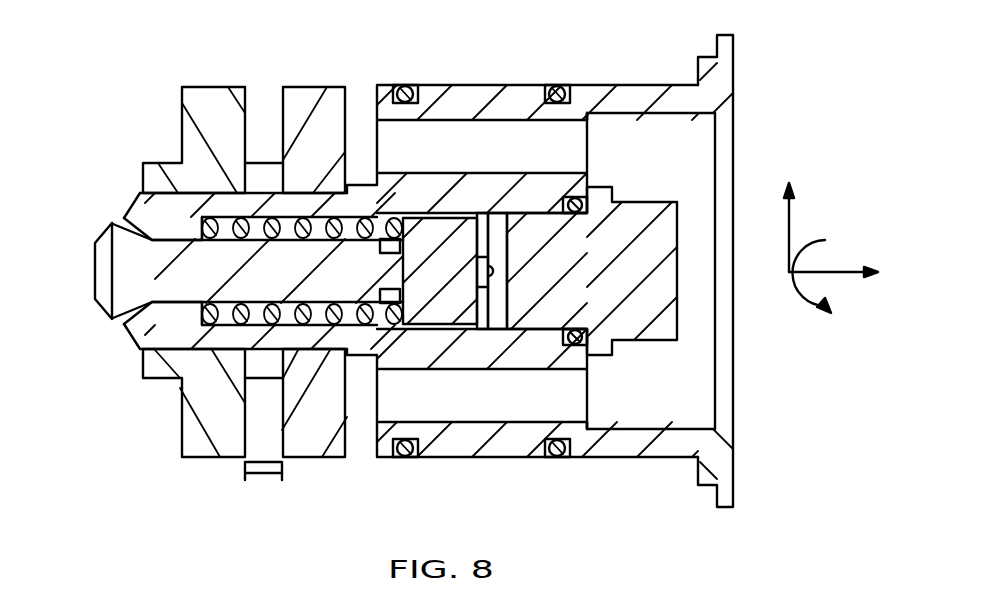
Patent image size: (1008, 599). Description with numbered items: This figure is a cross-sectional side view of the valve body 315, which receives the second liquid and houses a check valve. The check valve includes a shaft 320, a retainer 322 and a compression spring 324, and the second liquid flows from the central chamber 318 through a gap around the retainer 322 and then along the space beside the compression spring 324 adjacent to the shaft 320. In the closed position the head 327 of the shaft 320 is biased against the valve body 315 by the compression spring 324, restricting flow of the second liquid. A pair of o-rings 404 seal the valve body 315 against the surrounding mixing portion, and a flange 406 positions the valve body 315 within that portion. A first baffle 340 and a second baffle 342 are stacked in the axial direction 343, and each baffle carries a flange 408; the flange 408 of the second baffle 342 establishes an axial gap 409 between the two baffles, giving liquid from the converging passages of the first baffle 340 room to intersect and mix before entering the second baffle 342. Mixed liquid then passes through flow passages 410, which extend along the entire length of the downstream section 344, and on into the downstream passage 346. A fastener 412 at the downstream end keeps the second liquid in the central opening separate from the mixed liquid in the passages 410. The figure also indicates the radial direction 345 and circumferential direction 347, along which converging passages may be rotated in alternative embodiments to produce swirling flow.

The valve body 315 is at (343, 45).
The central chamber 318 is at (498, 303).
The shaft 320 is at (150, 268).
The retainer 322 is at (443, 232).
The compression spring 324 is at (145, 325).
The head 327 is at (112, 285).
The first baffle 340 is at (210, 87).
The second baffle 342 is at (312, 432).
The axial direction 343 is at (842, 277).
The downstream section 344 is at (483, 457).
The radial direction 345 is at (789, 248).
The passage 346 is at (648, 382).
The circumferential direction 347 is at (808, 285).
The o-rings 404 is at (405, 85).
The flange 406 is at (722, 34).
The flange 408 is at (263, 163).
The axial gap 409 is at (262, 476).
The flow passages 410 is at (477, 120).
The fastener 412 is at (638, 222).